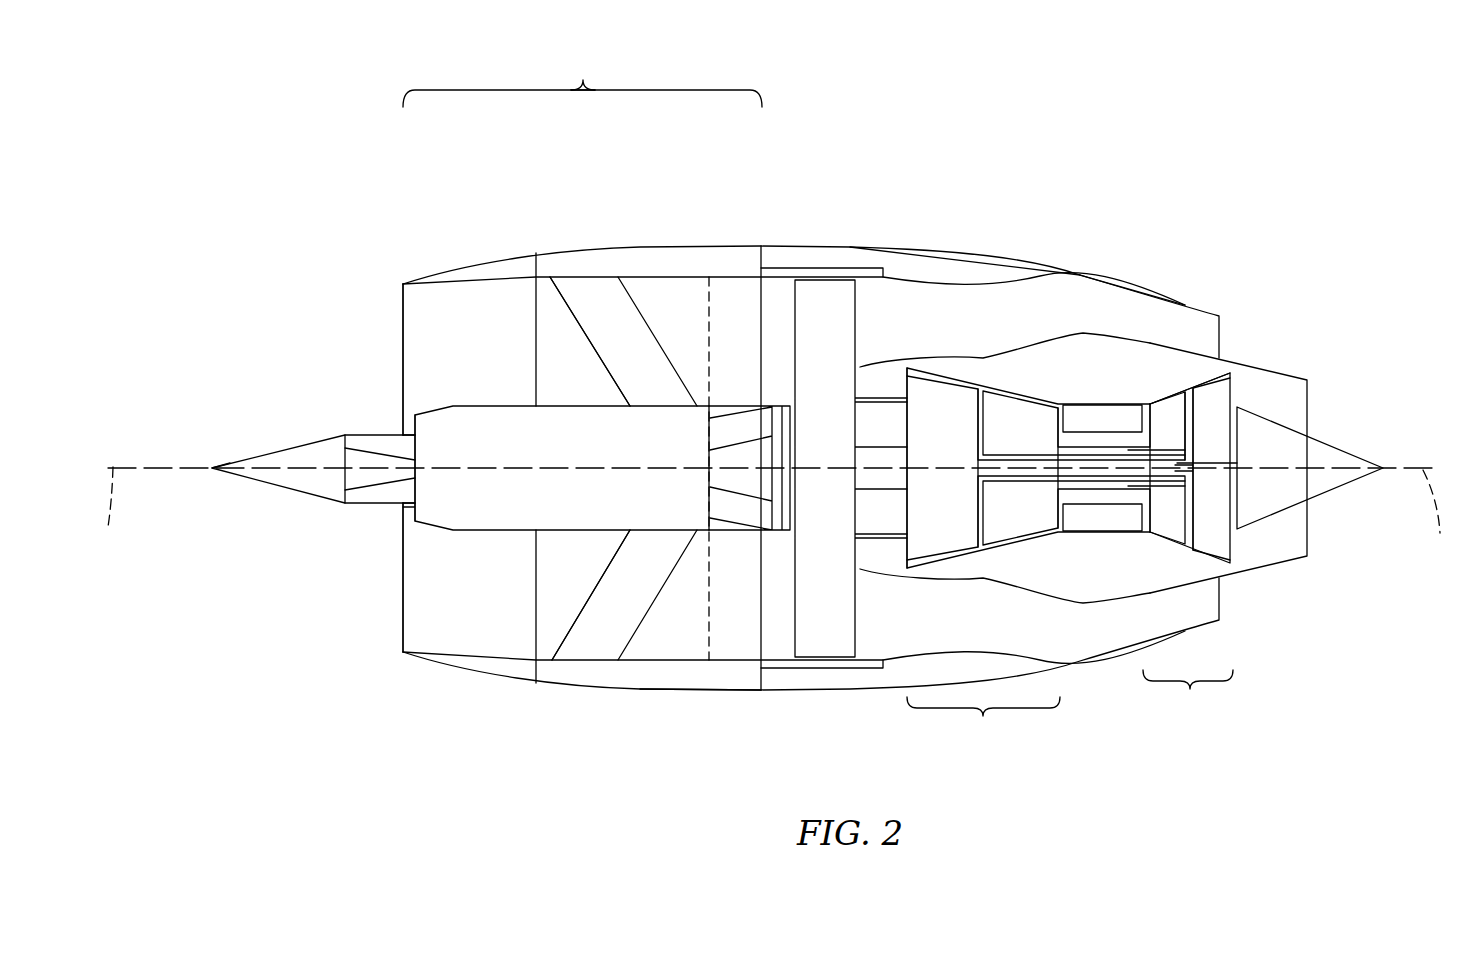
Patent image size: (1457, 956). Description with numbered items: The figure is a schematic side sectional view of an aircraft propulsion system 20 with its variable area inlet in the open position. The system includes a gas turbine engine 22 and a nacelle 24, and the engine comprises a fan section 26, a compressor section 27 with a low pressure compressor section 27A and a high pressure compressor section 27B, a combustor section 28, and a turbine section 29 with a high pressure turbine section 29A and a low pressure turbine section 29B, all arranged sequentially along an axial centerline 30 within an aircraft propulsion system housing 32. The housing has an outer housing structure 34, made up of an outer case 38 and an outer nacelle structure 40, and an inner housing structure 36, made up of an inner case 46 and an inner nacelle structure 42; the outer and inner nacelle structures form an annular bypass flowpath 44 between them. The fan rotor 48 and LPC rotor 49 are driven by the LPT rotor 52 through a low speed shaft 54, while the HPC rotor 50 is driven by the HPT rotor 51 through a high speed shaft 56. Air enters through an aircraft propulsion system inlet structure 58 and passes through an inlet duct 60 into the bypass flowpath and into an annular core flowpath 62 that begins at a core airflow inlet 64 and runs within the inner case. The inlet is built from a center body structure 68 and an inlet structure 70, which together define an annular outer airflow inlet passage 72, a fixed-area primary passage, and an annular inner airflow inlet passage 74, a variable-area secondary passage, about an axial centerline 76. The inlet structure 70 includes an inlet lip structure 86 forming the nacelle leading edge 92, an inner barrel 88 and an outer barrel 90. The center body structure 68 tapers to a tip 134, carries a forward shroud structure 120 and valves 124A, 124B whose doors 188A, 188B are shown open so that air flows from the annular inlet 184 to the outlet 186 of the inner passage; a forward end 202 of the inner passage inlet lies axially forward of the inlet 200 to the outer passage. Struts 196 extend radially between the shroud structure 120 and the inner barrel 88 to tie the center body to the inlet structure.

The aircraft propulsion system 20 is at (1185, 177).
The gas turbine engine 22 is at (770, 632).
The nacelle 24 is at (690, 212).
The fan section 26 is at (865, 637).
The compressor section 27 is at (983, 722).
The low pressure compressor section 27A is at (945, 570).
The high pressure compressor section 27B is at (1020, 555).
The combustor section 28 is at (1092, 550).
The turbine section 29 is at (1188, 696).
The high pressure turbine section 29A is at (1160, 548).
The low pressure turbine section 29B is at (1207, 563).
The axial centerline 30 is at (1437, 517).
The aircraft propulsion system housing 32 is at (851, 198).
The outer housing structure 34 is at (865, 232).
The inner housing structure 36 is at (1098, 325).
The outer case 38 is at (800, 268).
The outer nacelle structure 40 is at (917, 247).
The inner nacelle structure 42 is at (1157, 345).
The bypass flowpath 44 is at (975, 349).
The inner case 46 is at (1100, 400).
The fan rotor 48 is at (858, 345).
The LPC rotor 49 is at (940, 380).
The HPC rotor 50 is at (1030, 400).
The HPT rotor 51 is at (1173, 392).
The LPT rotor 52 is at (1232, 393).
The low speed shaft 54 is at (1207, 460).
The high speed shaft 56 is at (1177, 463).
The aircraft propulsion system inlet structure 58 is at (582, 79).
The inlet duct 60 is at (742, 655).
The core flowpath 62 is at (1277, 399).
The core airflow inlet 64 is at (858, 552).
The center body structure 68 is at (290, 510).
The inlet structure 70 is at (720, 242).
The outer airflow inlet passage 72 is at (433, 326).
The inner airflow inlet passage 74 is at (405, 425).
The axial centerline 76 is at (110, 515).
The inlet lip structure 86 is at (505, 252).
The inner barrel 88 is at (663, 282).
The outer barrel 90 is at (655, 242).
The leading edge 92 is at (403, 284).
The center body shroud structure 120 is at (497, 540).
The valve 124A is at (383, 536).
The valve 124B is at (733, 402).
The tip 134 is at (212, 470).
The inlet 184 is at (402, 508).
The outlet 186 is at (712, 524).
The door 188A is at (380, 497).
The door 188B is at (722, 508).
The strut 196 is at (575, 325).
The inlet 200 is at (400, 650).
The forward end 202 is at (345, 433).